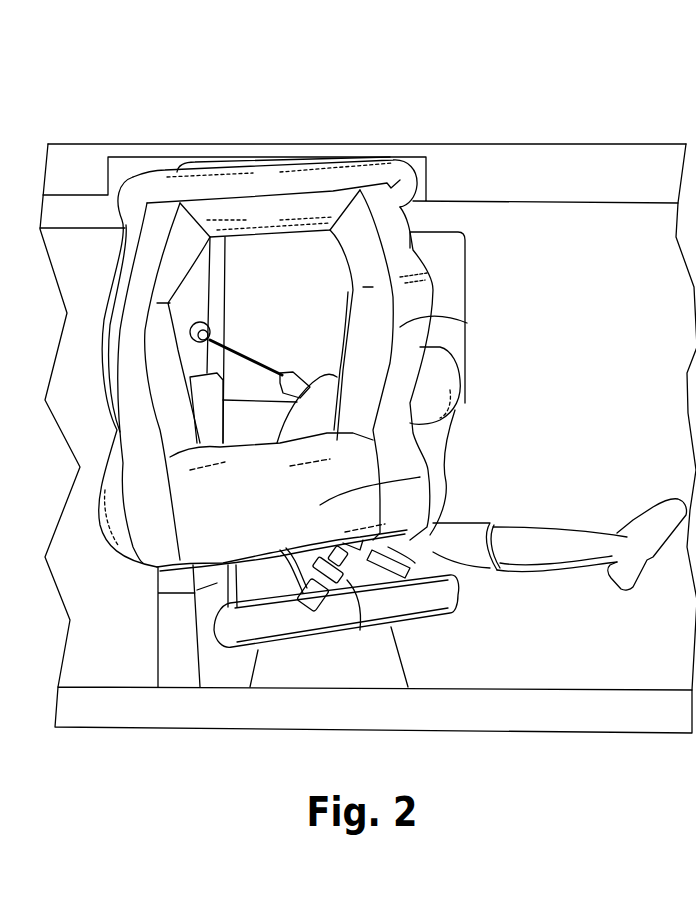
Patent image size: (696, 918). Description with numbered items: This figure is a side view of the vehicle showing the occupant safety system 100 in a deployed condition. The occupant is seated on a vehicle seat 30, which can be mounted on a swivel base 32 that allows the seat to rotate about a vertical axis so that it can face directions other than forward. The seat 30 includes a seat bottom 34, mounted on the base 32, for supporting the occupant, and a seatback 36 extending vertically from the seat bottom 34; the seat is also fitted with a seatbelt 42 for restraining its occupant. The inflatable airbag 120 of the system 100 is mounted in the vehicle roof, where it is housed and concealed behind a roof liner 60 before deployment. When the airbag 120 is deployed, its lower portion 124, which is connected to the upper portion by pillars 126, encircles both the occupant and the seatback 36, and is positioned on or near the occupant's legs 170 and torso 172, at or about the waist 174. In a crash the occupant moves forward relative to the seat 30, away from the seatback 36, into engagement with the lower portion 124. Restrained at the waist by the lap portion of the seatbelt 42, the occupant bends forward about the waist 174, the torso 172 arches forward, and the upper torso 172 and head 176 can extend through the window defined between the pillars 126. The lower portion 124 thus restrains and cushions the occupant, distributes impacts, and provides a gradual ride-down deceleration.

The occupant safety system 100 is at (262, 128).
The inflatable airbag 120 is at (438, 245).
The lower portion 124 is at (447, 487).
The pillars 126 is at (401, 327).
The head 176 is at (438, 380).
The roof liner 60 is at (505, 203).
The seatbelt 42 is at (242, 352).
The torso 172 is at (338, 430).
The legs 170 is at (465, 570).
The waist 174 is at (348, 630).
The vehicle seat 30 is at (391, 607).
The swivel base 32 is at (376, 657).
The seat bottom 34 is at (458, 607).
The seatback 36 is at (157, 593).